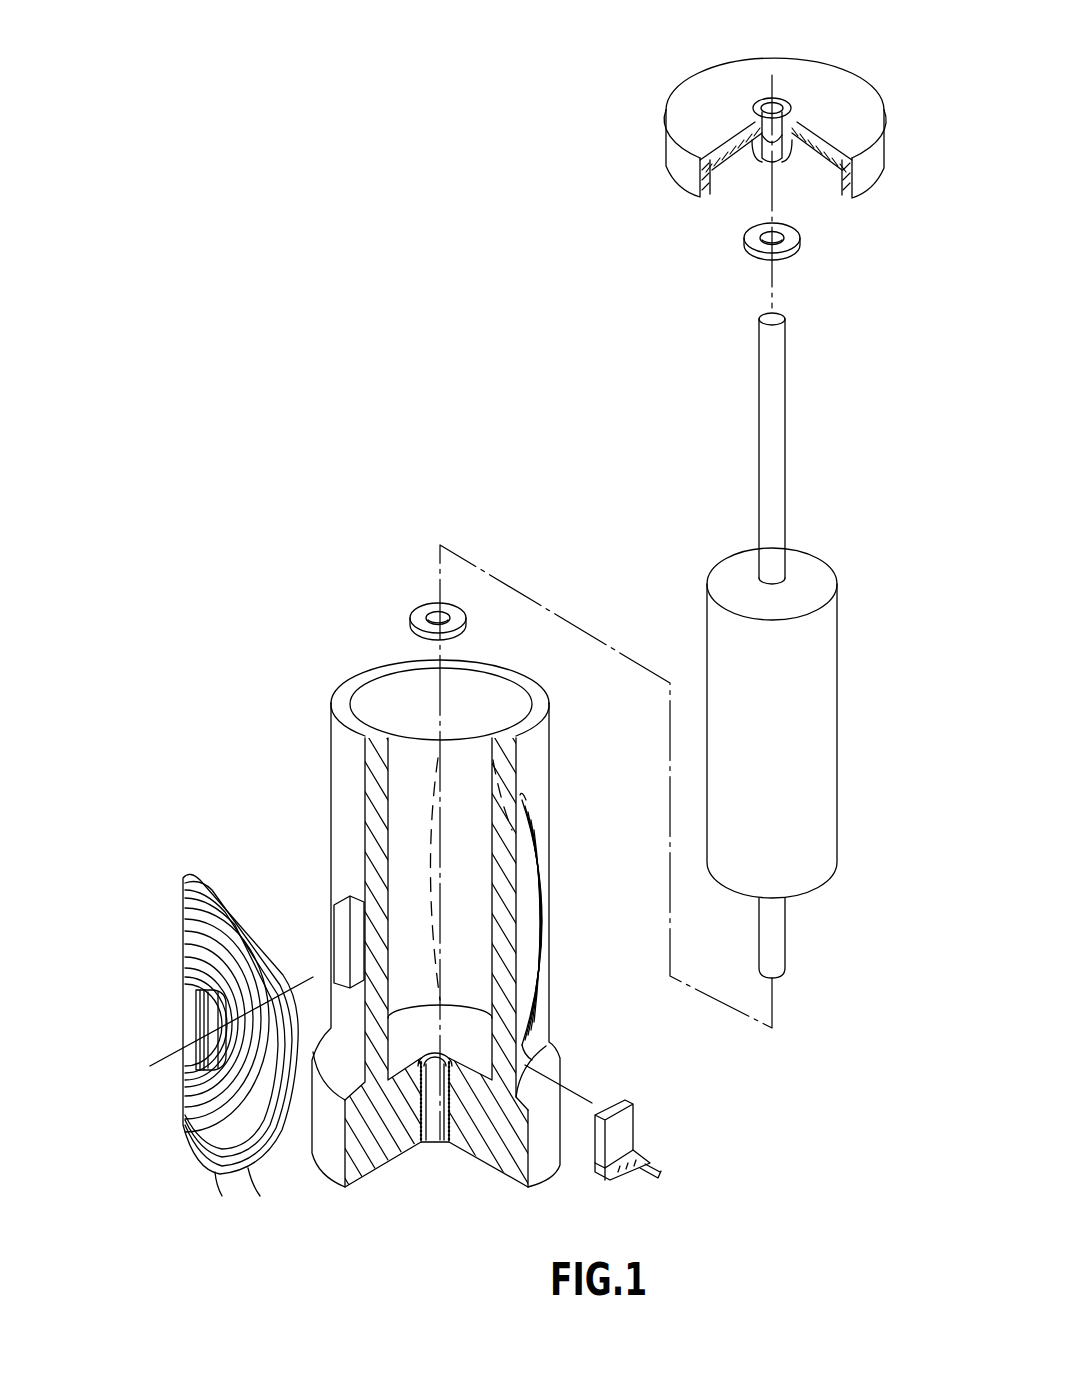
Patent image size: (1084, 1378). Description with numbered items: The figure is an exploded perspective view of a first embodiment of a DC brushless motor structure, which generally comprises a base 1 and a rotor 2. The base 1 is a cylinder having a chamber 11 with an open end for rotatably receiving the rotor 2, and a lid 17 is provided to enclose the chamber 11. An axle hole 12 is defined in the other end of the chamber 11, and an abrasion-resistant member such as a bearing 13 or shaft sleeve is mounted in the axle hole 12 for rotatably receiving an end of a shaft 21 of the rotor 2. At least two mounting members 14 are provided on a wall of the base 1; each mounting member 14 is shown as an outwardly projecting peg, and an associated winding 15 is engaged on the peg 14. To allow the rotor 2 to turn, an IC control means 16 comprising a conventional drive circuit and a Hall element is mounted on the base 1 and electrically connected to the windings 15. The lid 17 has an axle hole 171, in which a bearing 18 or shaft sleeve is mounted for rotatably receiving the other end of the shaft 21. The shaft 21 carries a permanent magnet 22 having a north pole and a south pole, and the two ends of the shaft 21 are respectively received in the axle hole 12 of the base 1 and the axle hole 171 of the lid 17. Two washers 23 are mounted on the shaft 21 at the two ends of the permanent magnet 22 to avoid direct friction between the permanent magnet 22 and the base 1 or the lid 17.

The base 1 is at (337, 802).
The chamber 11 is at (388, 693).
The axle hole 12 is at (438, 1145).
The bearing 13 is at (427, 1145).
The mounting member 14 is at (337, 918).
The winding 15 is at (540, 840).
The IC control means 16 is at (620, 1112).
The lid 17 is at (857, 90).
The axle hole 171 is at (778, 158).
The bearing 18 is at (784, 108).
The rotor 2 is at (849, 507).
The shaft 21 is at (762, 462).
The permanent magnet 22 is at (826, 710).
The washer 23 is at (798, 248).